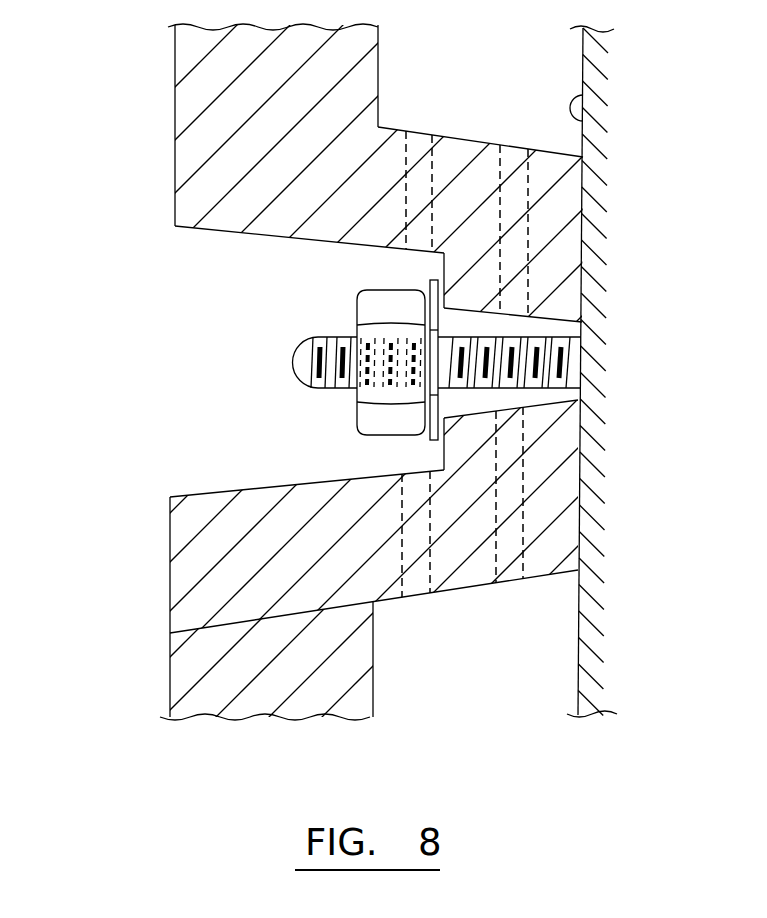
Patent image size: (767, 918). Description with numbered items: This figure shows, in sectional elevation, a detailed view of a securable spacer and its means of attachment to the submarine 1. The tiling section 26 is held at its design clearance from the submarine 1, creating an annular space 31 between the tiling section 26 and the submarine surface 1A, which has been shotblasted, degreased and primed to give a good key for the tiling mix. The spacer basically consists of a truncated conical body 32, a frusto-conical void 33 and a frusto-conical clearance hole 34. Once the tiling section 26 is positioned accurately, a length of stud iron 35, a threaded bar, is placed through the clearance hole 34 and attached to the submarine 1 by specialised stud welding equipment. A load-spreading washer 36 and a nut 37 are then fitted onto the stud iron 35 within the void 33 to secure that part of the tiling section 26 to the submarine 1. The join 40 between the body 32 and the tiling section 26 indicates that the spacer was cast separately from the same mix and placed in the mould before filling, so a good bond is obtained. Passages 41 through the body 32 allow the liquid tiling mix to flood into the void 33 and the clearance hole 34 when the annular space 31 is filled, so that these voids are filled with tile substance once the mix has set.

The submarine 1 is at (593, 155).
The surface of submarine 1A is at (585, 92).
The tiling section 26 is at (248, 93).
The annular space 31 is at (533, 65).
The truncated conical body 32 is at (473, 552).
The frusto-conical void 33 is at (252, 300).
The frusto-conical clearance hole 34 is at (522, 398).
The stud iron 35 is at (307, 360).
The load-spreading washer 36 is at (430, 286).
The nut 37 is at (383, 313).
The join 40 is at (237, 622).
The passages 41 is at (418, 175).